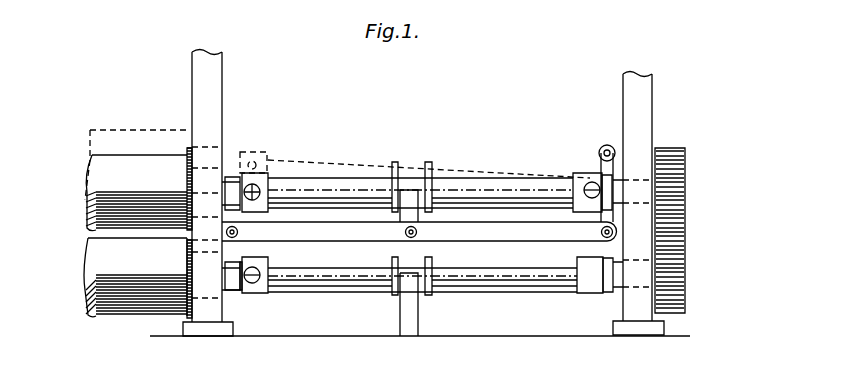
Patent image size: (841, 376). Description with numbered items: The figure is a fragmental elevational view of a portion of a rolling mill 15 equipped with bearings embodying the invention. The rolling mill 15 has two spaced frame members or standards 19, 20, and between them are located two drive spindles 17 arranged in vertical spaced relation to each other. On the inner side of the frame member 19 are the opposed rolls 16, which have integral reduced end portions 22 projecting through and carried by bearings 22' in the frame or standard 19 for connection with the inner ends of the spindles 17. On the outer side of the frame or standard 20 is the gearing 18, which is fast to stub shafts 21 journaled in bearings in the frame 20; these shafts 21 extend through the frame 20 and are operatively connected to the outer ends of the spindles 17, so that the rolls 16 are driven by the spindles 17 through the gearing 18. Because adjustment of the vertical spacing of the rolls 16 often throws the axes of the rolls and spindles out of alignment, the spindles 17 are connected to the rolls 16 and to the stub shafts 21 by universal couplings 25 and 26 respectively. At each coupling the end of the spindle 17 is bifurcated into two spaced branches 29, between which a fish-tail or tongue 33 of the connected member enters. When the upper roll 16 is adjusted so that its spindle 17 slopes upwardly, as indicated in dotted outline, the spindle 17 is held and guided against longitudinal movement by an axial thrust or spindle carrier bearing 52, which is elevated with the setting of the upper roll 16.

The rolling mill 15 is at (265, 82).
The rolls 16 is at (95, 222).
The spindles 17 is at (470, 180).
The gearing 18 is at (680, 266).
The frame member 19 is at (205, 92).
The frame member 20 is at (642, 122).
The stub shafts 21 is at (620, 190).
The reduced end portions 22 is at (256, 223).
The bearings 22' is at (167, 233).
The universal couplings 25 is at (274, 165).
The universal couplings 26 is at (580, 165).
The branches 29 is at (262, 292).
The tongue 33 is at (592, 182).
The spindle carrier bearing 52 is at (400, 218).